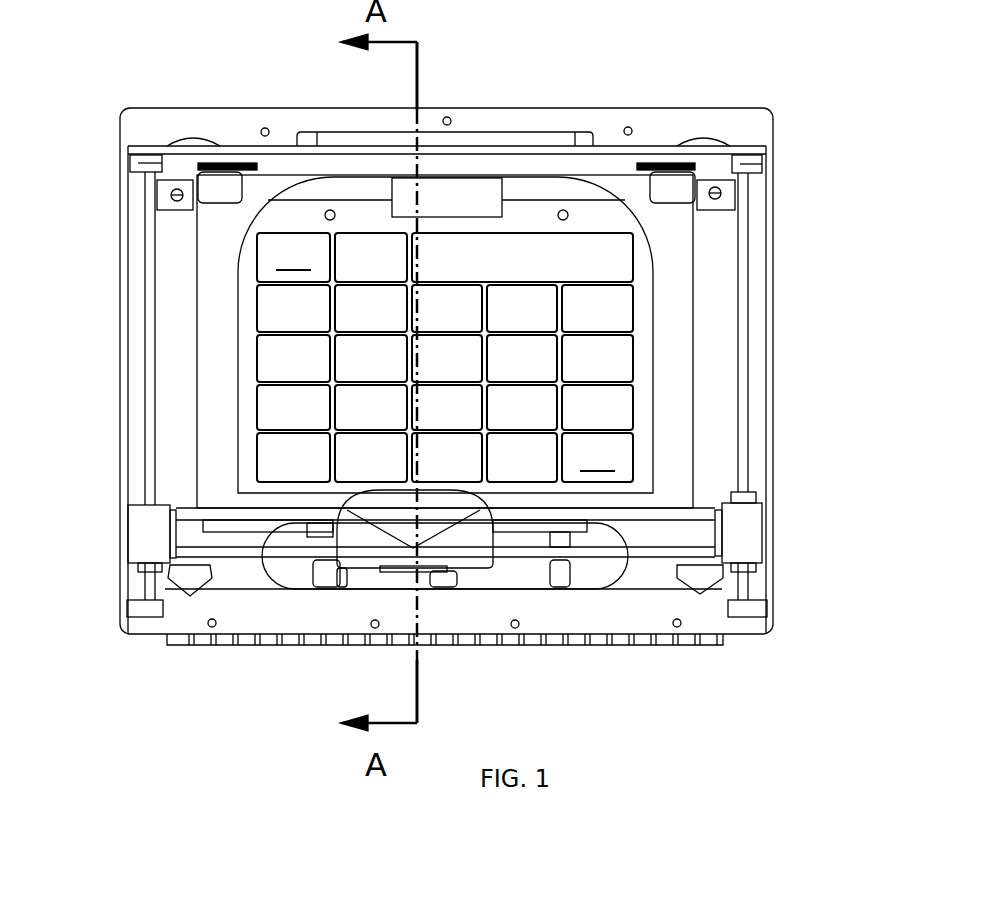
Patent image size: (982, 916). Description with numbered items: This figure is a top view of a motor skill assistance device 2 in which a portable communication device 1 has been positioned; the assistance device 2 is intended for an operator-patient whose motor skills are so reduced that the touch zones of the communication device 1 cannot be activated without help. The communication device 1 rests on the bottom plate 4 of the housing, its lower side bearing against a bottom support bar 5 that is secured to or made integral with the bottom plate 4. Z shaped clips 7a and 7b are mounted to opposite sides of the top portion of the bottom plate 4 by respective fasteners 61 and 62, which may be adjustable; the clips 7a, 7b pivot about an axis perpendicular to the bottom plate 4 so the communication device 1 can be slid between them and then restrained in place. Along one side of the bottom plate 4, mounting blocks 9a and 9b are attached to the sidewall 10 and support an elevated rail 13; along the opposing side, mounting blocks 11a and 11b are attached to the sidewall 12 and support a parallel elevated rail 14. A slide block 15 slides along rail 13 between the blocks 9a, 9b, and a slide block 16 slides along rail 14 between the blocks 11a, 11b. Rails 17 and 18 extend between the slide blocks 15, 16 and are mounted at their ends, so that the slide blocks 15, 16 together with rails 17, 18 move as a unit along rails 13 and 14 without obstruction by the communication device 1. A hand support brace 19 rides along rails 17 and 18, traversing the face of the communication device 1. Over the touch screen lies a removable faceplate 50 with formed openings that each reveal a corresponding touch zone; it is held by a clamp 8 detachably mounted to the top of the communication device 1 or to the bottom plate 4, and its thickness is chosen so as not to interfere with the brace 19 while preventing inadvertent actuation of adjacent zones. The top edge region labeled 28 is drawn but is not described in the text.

The portable communication device 1 is at (613, 165).
The motor skill assistance device 2 is at (651, 104).
The bottom plate 4 is at (710, 378).
The bottom support bar 5 is at (322, 522).
The Z shaped clip 7a is at (213, 185).
The Z shaped clip 7b is at (673, 185).
The clamp 8 is at (527, 185).
The mounting block 9a is at (130, 163).
The mounting block 9b is at (140, 608).
The sidewall 10 is at (120, 353).
The mounting block 11a is at (752, 165).
The mounting block 11b is at (752, 612).
The sidewall 12 is at (774, 446).
The rail 13 is at (143, 263).
The rail 14 is at (744, 280).
The slide block 15 is at (152, 531).
The slide block 16 is at (752, 531).
The rail 17 is at (195, 505).
The rail 18 is at (243, 550).
The hand support brace 19 is at (457, 555).
The top wall 28 is at (335, 107).
The removable faceplate 50 is at (660, 268).
The fastener 61 is at (176, 196).
The fastener 62 is at (720, 196).